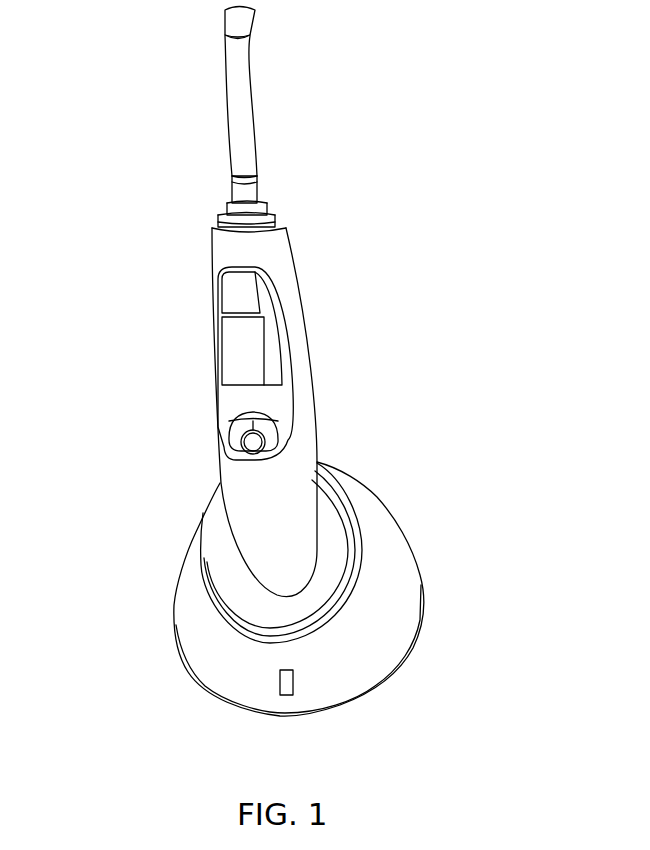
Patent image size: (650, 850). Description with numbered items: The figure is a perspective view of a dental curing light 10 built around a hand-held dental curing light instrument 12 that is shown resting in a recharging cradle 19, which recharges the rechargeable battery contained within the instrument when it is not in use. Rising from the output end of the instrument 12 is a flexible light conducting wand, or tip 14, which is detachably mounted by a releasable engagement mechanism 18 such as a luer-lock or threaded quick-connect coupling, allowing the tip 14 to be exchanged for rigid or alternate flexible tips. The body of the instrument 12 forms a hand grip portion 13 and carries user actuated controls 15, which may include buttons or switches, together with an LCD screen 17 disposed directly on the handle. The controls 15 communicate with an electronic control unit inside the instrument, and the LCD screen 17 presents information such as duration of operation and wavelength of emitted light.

The dental curing light 10 is at (358, 245).
The hand-held dental curing light instrument 12 is at (309, 404).
The hand grip portion 13 is at (290, 470).
The light conducting wand, or tip 14 is at (257, 103).
The user actuated controls 15 is at (217, 354).
The LCD screen 17 is at (254, 343).
The releasable engagement mechanism 18 is at (275, 207).
The recharging cradle 19 is at (387, 592).